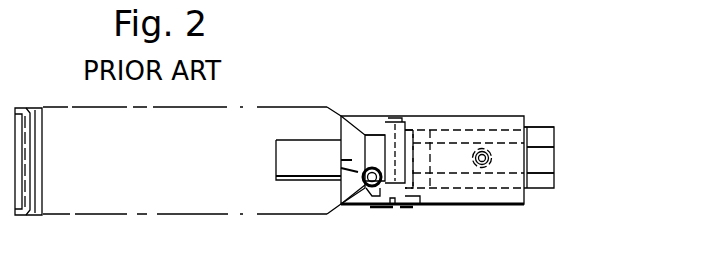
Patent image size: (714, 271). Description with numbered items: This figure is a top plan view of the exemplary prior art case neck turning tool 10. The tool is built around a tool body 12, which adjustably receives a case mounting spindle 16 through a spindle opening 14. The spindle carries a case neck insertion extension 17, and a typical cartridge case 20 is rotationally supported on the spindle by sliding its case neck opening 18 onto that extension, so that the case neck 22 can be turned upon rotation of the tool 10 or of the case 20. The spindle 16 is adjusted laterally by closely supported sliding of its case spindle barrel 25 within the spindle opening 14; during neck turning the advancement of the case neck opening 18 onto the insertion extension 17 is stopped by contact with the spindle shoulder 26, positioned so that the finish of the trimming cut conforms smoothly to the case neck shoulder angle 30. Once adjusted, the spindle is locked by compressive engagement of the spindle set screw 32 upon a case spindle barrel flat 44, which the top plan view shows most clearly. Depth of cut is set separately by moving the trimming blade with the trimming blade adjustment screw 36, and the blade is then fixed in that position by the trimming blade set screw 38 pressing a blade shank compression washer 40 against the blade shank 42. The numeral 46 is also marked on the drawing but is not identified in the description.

The case neck turning tool 10 is at (484, 65).
The tool body 12 is at (491, 115).
The spindle opening 14 is at (490, 188).
The case mounting spindle 16 is at (554, 141).
The case neck insertion extension 17 is at (276, 153).
The case neck opening 18 is at (413, 140).
The cartridge case 20 is at (157, 214).
The case neck 22 is at (375, 133).
The case spindle barrel 25 is at (542, 127).
The spindle shoulder 26 is at (403, 137).
The case neck shoulder angle 30 is at (341, 108).
The spindle set screw 32 is at (478, 168).
The trimming blade adjustment screw 36 is at (362, 180).
The trimming blade set screw 38 is at (413, 208).
The blade shank compression washer 40 is at (366, 206).
The blade shank 42 is at (363, 165).
The case spindle barrel flat 44 is at (539, 155).
The line 46 is at (656, 266).